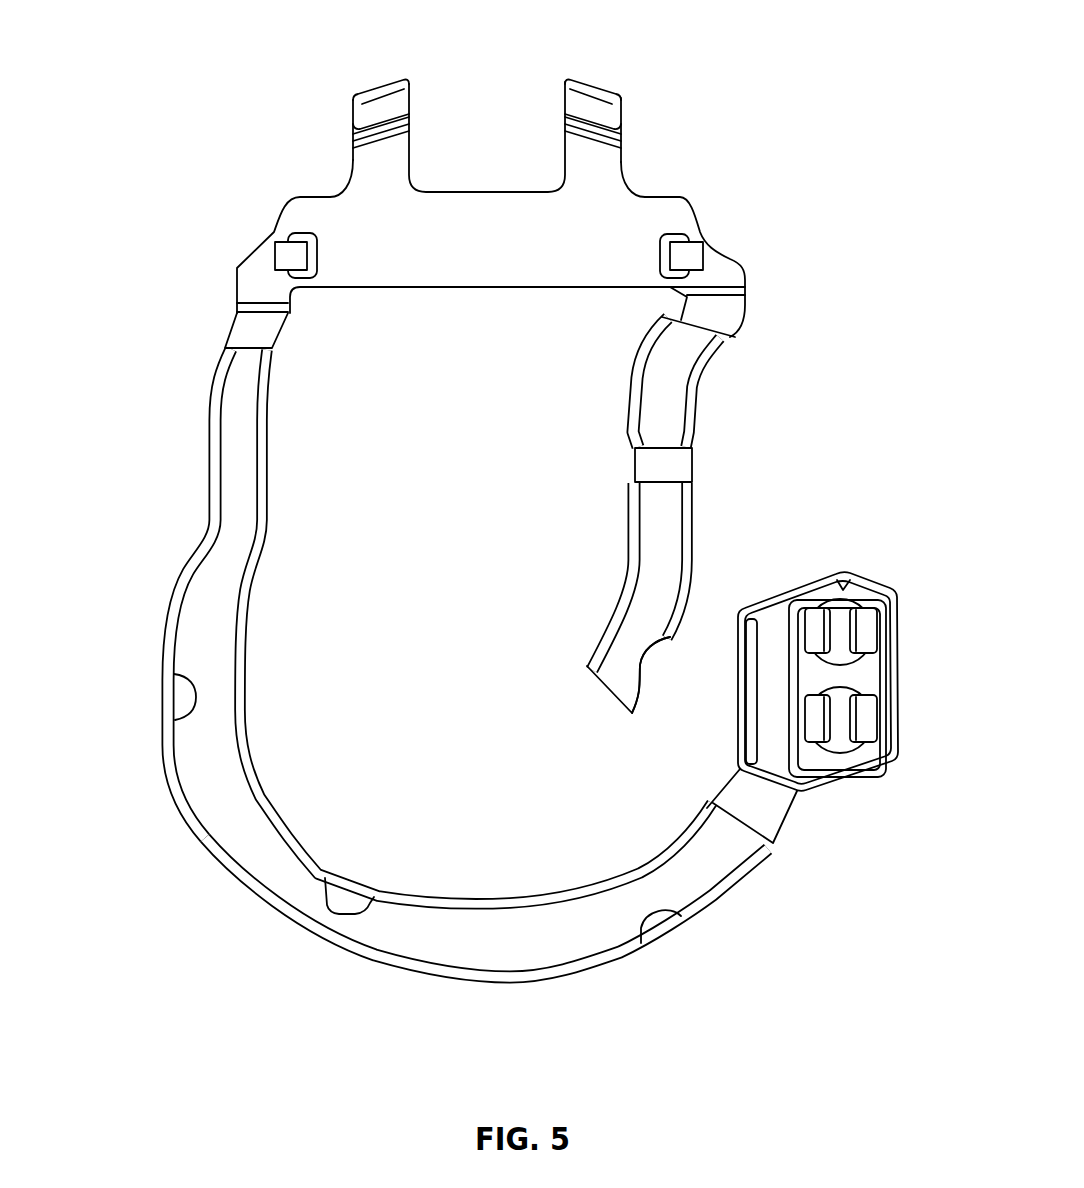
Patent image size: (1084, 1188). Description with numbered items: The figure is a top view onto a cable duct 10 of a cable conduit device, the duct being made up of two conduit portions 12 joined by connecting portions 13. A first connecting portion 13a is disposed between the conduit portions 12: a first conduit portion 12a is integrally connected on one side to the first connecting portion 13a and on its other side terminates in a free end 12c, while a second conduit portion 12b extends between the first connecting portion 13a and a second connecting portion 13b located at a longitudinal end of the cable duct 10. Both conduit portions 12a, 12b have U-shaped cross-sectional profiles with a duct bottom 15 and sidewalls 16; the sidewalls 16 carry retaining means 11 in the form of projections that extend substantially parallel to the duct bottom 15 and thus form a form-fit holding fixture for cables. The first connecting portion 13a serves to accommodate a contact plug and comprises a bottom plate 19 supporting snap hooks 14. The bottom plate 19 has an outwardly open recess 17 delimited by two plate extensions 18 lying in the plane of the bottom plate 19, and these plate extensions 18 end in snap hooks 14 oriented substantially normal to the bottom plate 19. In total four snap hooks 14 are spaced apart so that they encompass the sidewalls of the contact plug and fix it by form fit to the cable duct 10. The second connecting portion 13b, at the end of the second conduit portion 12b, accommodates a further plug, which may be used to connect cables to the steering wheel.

The cable duct 10 is at (868, 347).
The retaining means 11 is at (663, 464).
The conduit portions 12 is at (435, 677).
The first conduit portion 12a is at (660, 425).
The second conduit portion 12b is at (185, 812).
The free end 12c is at (603, 687).
The connecting portion 13 is at (790, 486).
The first connecting portion 13a is at (620, 213).
The second connecting portion 13b is at (893, 683).
The snap hooks 14 is at (377, 92).
The duct bottom 15 is at (250, 838).
The sidewalls 16 is at (311, 940).
The recess 17 is at (493, 151).
The plate extensions 18 is at (345, 167).
The bottom plate 19 is at (460, 267).